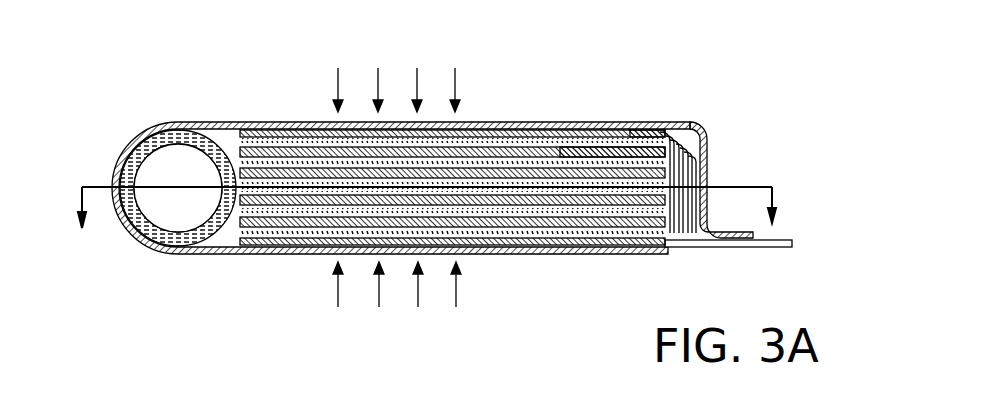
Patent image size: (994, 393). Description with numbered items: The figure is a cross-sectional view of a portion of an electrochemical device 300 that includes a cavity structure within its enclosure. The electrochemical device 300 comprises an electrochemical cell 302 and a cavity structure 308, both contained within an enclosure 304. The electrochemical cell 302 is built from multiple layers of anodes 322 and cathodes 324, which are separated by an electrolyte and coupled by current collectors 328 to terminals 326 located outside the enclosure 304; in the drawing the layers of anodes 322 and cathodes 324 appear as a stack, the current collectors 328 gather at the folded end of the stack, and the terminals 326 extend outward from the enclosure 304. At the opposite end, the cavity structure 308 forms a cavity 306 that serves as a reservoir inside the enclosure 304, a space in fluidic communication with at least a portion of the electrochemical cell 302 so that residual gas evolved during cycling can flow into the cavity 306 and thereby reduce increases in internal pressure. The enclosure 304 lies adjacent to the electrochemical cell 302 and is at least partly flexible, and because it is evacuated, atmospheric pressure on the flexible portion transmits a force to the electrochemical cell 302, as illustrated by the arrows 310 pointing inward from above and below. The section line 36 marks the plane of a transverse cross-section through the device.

The electrochemical device 300 is at (748, 111).
The electrochemical cell 302 is at (518, 134).
The enclosure 304 is at (218, 254).
The cavity 306 is at (168, 168).
The cavity structure 308 is at (133, 233).
The arrows 310 is at (378, 78).
The anodes 322 is at (660, 138).
The cathodes 324 is at (600, 138).
The terminals 326 is at (780, 245).
The current collectors 328 is at (705, 158).
The section line 36- 36 is at (428, 207).